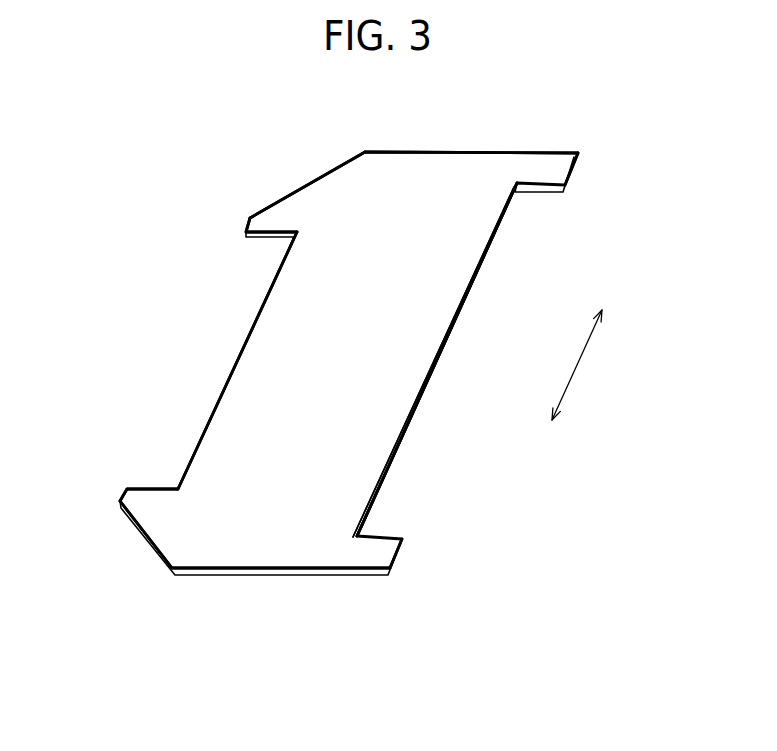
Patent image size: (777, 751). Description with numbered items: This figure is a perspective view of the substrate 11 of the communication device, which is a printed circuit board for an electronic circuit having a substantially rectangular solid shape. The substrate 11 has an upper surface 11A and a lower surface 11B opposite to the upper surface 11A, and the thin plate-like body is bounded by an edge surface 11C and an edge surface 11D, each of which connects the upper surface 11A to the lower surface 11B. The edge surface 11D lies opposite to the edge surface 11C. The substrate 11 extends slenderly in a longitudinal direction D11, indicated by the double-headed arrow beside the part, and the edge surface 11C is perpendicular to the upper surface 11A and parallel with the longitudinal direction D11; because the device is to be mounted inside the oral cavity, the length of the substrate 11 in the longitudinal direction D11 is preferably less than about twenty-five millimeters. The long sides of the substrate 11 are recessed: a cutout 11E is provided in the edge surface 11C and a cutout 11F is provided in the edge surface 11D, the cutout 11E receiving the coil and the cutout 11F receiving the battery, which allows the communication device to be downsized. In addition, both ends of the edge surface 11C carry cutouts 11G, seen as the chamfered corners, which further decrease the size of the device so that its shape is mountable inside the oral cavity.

The substrate 11 is at (416, 162).
The upper surface 11A is at (497, 170).
The lower surface 11B is at (310, 577).
The edge surface 11C is at (247, 225).
The edge surface 11D is at (565, 183).
The cutout 11E is at (236, 362).
The cutout 11F is at (421, 403).
The cutouts 11G is at (302, 188).
The longitudinal direction D11 is at (575, 368).